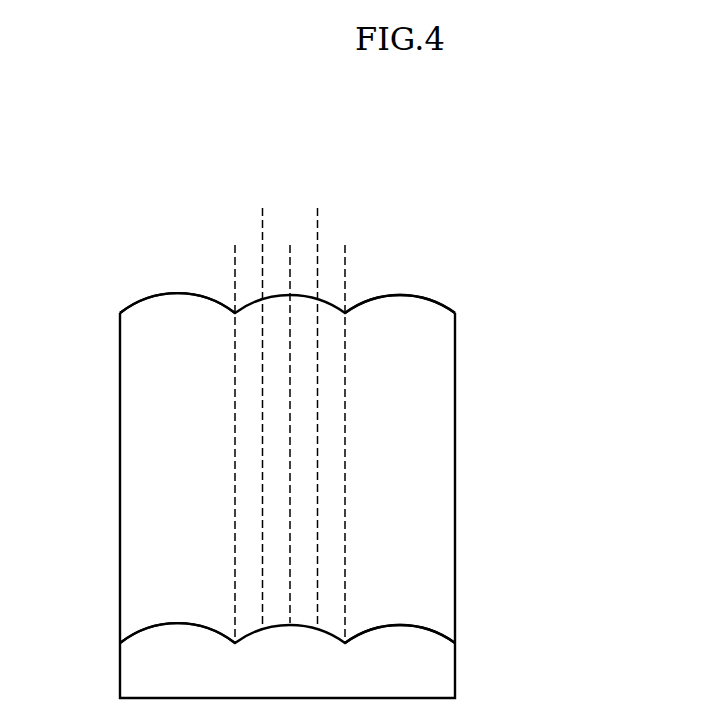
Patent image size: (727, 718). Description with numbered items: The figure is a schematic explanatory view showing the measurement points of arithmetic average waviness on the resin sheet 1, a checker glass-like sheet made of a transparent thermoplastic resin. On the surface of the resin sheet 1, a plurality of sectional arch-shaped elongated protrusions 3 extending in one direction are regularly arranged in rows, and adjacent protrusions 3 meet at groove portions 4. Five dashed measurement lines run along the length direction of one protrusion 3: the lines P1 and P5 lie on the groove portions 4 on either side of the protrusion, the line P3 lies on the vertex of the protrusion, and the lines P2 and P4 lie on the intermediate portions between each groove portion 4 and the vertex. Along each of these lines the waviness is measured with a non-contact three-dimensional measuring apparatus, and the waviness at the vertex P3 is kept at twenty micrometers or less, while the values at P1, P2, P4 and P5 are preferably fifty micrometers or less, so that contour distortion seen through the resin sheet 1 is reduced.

The resin sheet 1 is at (472, 485).
The protrusion 3 is at (147, 376).
The groove portion 4 is at (233, 588).
The groove portion measurement point P1 is at (233, 429).
The intermediate portion measurement point P2 is at (260, 405).
The vertex measurement point P3 is at (289, 419).
The intermediate portion measurement point P4 is at (316, 405).
The groove portion measurement point P5 is at (344, 429).